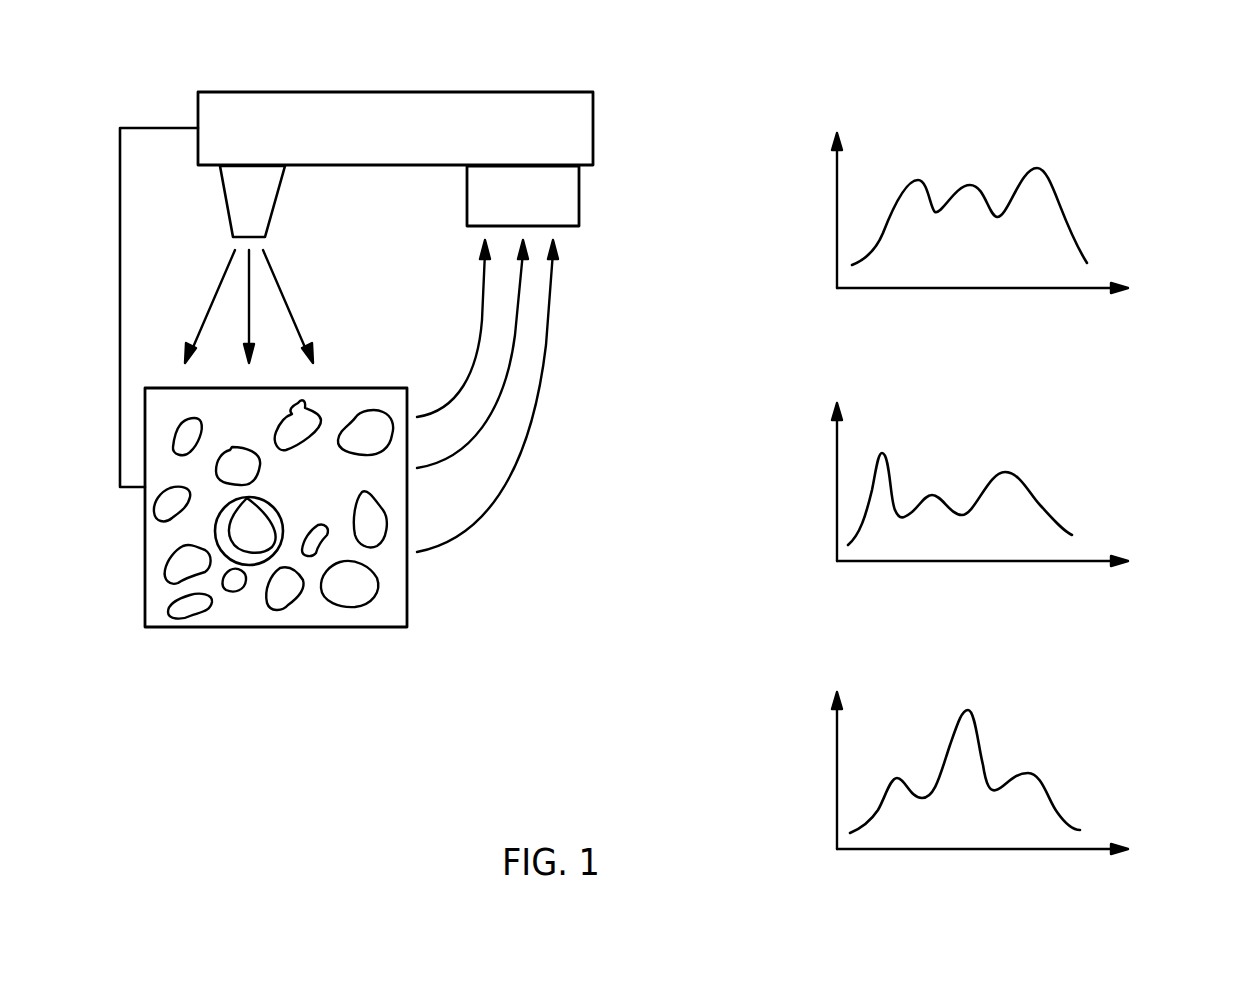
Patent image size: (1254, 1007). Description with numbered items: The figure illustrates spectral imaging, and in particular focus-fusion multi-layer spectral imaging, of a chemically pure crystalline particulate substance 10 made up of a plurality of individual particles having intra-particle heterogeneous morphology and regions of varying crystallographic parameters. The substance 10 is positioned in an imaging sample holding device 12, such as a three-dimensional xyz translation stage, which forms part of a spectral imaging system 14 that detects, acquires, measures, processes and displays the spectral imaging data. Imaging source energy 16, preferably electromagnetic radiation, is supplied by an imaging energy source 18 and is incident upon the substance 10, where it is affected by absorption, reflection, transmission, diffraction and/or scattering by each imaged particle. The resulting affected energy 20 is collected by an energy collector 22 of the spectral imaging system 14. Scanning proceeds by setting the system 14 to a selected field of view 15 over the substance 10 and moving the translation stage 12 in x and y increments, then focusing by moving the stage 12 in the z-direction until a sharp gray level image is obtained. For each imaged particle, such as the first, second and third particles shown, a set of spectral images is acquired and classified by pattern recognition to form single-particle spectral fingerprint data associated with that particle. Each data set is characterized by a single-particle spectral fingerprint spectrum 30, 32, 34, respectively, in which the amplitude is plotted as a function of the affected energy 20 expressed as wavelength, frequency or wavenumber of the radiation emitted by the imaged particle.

The chemically pure crystalline particulate substance 10 is at (273, 509).
The imaging sample holding device 12 is at (276, 529).
The spectral imaging system 14 is at (395, 128).
The field of view 15 is at (262, 567).
The imaging source energy 16 is at (261, 306).
The imaging energy source 18 is at (252, 201).
The affected energy 20 is at (502, 396).
The energy collector 22 is at (523, 196).
The single-particle spectral fingerprint spectrum S(p1) 30 is at (992, 222).
The single-particle spectral fingerprint spectrum S(p2) 32 is at (992, 492).
The single-particle spectral fingerprint spectrum S(p3) 34 is at (992, 781).